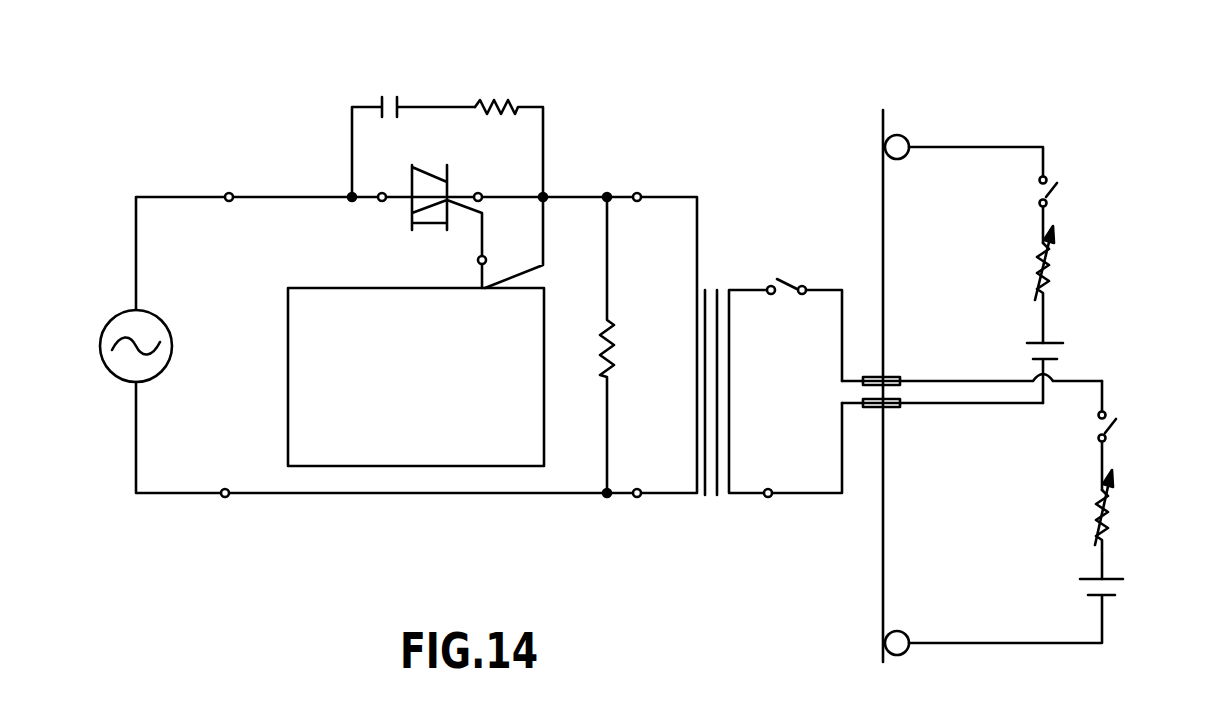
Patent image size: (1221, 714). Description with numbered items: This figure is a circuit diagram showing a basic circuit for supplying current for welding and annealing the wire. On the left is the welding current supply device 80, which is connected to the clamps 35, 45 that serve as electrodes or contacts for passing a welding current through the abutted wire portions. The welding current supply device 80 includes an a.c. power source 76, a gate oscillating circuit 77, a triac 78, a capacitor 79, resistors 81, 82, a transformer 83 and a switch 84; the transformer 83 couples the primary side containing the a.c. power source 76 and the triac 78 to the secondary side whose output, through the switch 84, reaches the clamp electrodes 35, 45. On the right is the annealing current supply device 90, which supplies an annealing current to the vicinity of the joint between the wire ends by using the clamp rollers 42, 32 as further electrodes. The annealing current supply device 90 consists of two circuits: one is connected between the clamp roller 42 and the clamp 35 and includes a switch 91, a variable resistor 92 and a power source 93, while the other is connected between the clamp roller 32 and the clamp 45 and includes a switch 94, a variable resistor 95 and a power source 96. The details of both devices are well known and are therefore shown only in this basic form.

The clamp roller 32 is at (895, 655).
The clamp 35 is at (898, 408).
The clamp roller 42 is at (905, 137).
The clamp 45 is at (897, 377).
The a.c. power source 76 is at (155, 327).
The gate oscillating circuit 77 is at (405, 456).
The triac 78 is at (420, 166).
The capacitor 79 is at (385, 89).
The welding current supply device 80 is at (262, 162).
The resistor 81 is at (513, 102).
The resistor 82 is at (623, 329).
The transformer 83 is at (713, 497).
The switch 84 is at (790, 287).
The annealing current supply device 90 is at (1068, 93).
The switch 91 is at (1058, 183).
The variable resistor 92 is at (1047, 261).
The power source 93 is at (1065, 344).
The switch 94 is at (1110, 426).
The variable resistor 95 is at (1112, 498).
The power source 96 is at (1125, 578).